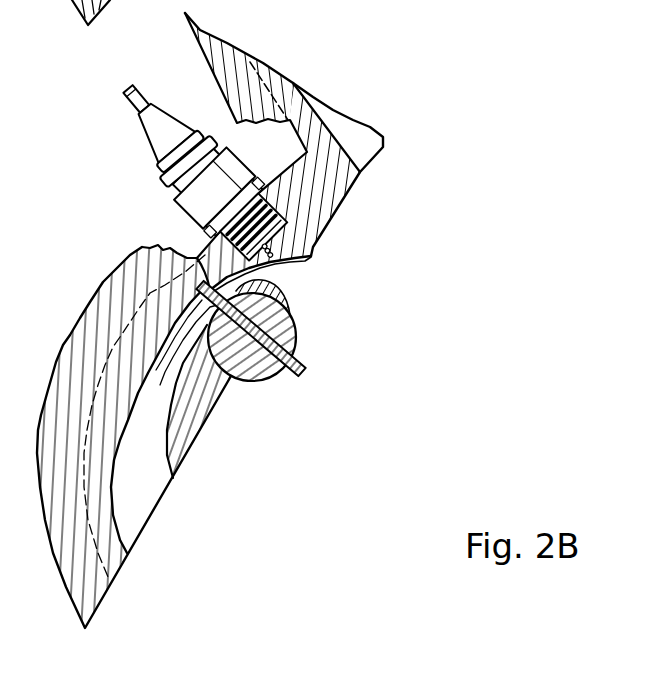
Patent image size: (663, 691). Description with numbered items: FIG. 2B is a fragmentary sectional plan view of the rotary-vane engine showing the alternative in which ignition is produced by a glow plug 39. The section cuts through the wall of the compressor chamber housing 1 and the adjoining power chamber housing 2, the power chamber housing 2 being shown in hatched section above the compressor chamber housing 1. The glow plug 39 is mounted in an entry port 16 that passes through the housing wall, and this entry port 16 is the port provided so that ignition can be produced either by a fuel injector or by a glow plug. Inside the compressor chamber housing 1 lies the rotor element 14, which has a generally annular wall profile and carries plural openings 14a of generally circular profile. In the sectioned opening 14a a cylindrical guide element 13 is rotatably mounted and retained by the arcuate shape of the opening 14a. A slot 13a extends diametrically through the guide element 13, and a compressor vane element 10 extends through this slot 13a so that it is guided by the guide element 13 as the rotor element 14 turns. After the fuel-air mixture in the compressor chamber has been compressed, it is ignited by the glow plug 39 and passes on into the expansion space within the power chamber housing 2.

The compressor chamber housing 1 is at (105, 497).
The power chamber housing 2 is at (332, 145).
The compressor vane element 10 is at (172, 343).
The guide element 13 is at (278, 323).
The slot 13a is at (160, 385).
The rotor element 14 is at (203, 409).
The opening 14a is at (292, 281).
The entry port 16 is at (288, 250).
The glow plug 39 is at (166, 139).